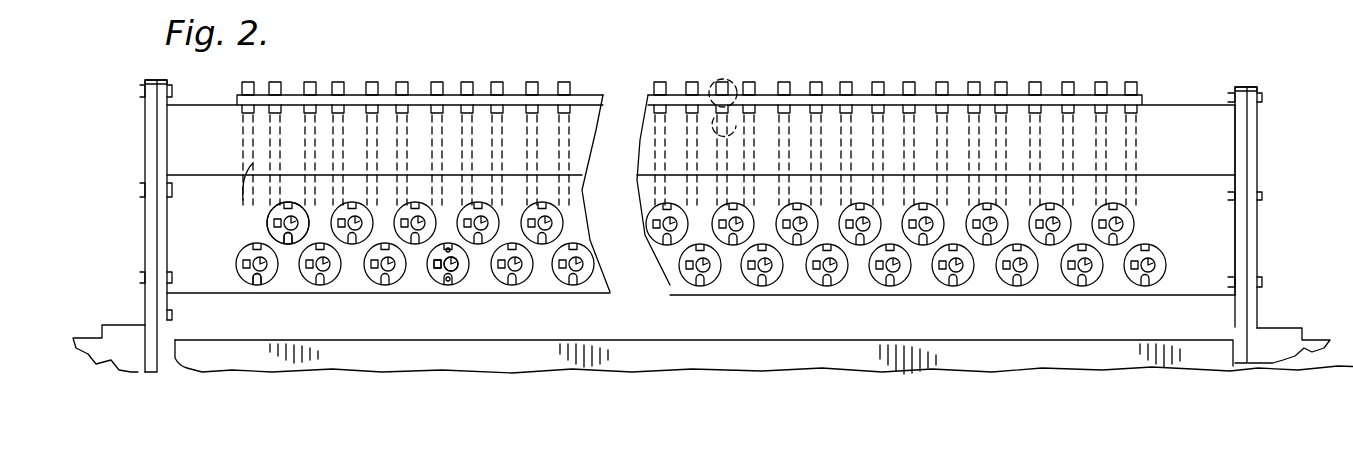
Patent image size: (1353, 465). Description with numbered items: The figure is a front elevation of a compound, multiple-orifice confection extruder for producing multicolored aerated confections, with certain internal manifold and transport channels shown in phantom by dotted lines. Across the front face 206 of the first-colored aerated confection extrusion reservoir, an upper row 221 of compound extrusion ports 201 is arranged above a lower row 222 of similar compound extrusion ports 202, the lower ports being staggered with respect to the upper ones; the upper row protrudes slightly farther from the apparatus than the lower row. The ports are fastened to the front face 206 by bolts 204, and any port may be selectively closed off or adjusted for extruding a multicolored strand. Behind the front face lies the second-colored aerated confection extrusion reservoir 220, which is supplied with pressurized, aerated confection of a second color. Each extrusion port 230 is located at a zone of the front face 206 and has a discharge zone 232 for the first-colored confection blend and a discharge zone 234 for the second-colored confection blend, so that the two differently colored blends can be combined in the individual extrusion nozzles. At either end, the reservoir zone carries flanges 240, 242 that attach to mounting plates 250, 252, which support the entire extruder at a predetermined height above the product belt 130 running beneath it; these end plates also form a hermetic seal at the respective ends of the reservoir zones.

The product belt 130 is at (795, 316).
The upper compound extrusion port 201 is at (270, 218).
The lower compound extrusion port 202 is at (242, 281).
The bolt 204 is at (290, 245).
The front face 206 is at (1220, 233).
The second-colored aerated confection extrusion reservoir 220 is at (1180, 122).
The upper row 221 is at (277, 203).
The lower row 222 is at (237, 262).
The extrusion port 230 is at (461, 285).
The discharge zone for first-colored confection 232 is at (457, 264).
The discharge zone for second-colored confection 234 is at (431, 268).
The flange 240 is at (1238, 87).
The flange 242 is at (152, 78).
The mounting plate 250 is at (1258, 125).
The mounting plate 252 is at (148, 120).